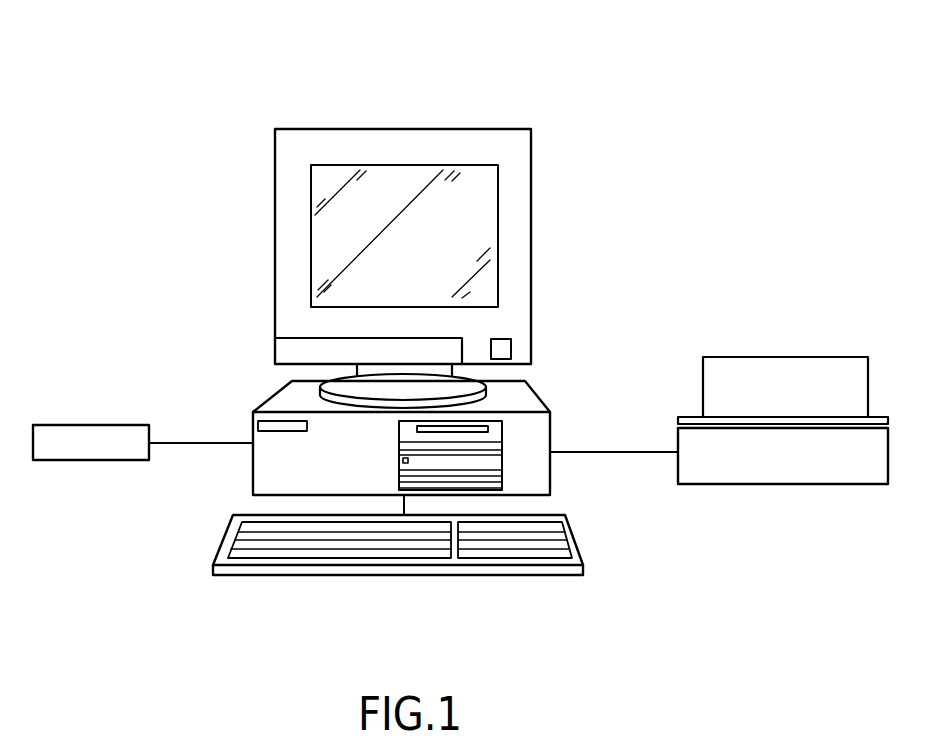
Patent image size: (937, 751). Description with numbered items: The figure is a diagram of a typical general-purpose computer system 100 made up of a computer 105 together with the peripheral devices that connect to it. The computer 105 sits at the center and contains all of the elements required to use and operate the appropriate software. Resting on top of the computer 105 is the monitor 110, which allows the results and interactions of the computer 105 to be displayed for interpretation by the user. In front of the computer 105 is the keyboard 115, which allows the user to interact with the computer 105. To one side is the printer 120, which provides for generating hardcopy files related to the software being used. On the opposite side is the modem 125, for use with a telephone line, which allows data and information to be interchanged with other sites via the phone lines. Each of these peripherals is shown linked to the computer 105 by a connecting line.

The general-purpose computer system 100 is at (746, 75).
The computer 105 is at (543, 396).
The monitor 110 is at (531, 130).
The keyboard 115 is at (583, 553).
The printer 120 is at (758, 356).
The modem 125 is at (108, 425).